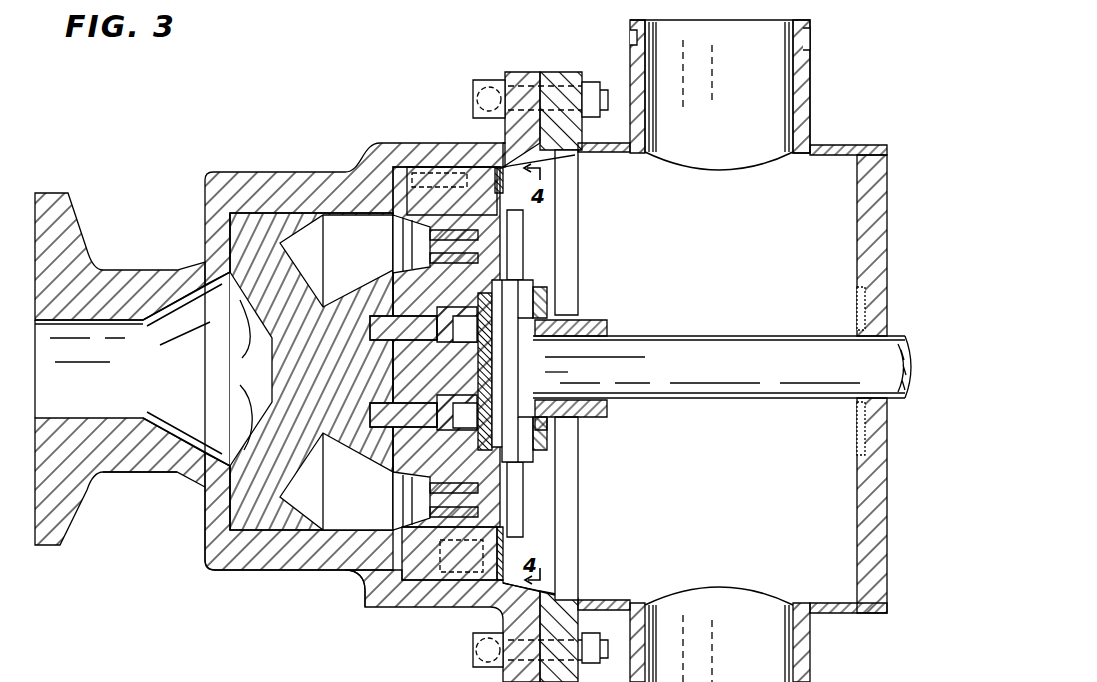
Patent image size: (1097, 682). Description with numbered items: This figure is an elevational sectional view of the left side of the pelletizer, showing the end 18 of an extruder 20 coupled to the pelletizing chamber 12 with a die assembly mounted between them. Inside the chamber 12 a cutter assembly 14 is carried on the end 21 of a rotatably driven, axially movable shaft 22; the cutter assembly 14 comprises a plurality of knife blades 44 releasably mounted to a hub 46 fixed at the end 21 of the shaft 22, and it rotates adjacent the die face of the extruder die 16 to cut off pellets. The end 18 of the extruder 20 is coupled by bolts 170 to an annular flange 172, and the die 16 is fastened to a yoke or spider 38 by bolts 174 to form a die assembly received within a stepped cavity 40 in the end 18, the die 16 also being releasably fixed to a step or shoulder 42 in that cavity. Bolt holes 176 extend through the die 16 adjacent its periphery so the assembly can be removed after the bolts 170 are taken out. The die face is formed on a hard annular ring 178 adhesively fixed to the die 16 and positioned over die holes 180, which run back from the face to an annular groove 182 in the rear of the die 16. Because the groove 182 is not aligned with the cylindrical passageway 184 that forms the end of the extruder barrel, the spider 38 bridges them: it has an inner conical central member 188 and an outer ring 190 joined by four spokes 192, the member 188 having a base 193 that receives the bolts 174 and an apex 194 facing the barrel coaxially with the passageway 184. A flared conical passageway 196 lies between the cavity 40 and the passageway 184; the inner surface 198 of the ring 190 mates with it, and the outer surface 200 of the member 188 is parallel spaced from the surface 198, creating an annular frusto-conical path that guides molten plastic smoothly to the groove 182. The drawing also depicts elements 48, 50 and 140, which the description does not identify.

The pelletizing chamber 12 is at (828, 612).
The cutter assembly 14 is at (580, 282).
The extruder die 16 is at (445, 190).
The end of extruder 18 is at (418, 600).
The extruder 20 is at (45, 550).
The end of shaft 21 is at (556, 362).
The shaft 22 is at (781, 398).
The yoke or spider 38 is at (345, 305).
The stepped cavity 40 is at (352, 565).
The step or shoulder 42 is at (384, 592).
The cutters or knife blades 44 is at (517, 232).
The hub 46 is at (568, 316).
The lower pipe 48 is at (800, 670).
The upper pipe 50 is at (812, 95).
The tank wall 140 is at (872, 245).
The bolts 170 is at (480, 80).
The annular flange 172 is at (566, 72).
The bolts 174 is at (393, 292).
The bolt holes 176 is at (426, 166).
The hard annular ring 178 is at (520, 478).
The die holes 180 is at (478, 604).
The annular groove 182 is at (417, 535).
The cylindrical passageway 184 is at (108, 320).
The inner conical central member 188 is at (312, 532).
The outer ring 190 is at (205, 556).
The spokes 192 is at (205, 265).
The base 193 is at (400, 378).
The apex 194 is at (180, 487).
The flared conical passageway 196 is at (177, 312).
The inner surface 198 is at (300, 225).
The outer surface 200 is at (162, 477).